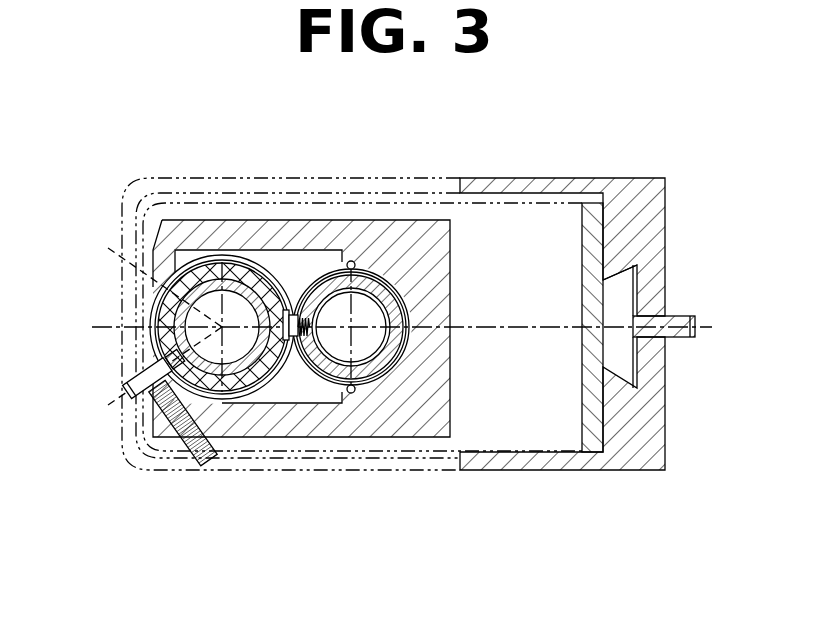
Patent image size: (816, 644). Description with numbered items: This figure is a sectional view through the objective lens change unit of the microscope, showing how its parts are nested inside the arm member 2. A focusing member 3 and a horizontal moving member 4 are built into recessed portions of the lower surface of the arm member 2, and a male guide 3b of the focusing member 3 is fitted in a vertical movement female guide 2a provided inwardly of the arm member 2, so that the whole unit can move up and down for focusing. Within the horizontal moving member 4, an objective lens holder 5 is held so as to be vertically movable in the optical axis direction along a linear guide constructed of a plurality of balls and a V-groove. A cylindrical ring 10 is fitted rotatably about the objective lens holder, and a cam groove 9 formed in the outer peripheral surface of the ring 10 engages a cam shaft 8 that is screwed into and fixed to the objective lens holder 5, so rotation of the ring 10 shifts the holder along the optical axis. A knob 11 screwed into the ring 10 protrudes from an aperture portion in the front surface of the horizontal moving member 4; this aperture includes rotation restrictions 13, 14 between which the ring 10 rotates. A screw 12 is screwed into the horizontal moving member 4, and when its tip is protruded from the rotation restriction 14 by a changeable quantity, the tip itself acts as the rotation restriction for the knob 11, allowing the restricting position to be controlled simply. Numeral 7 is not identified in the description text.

The arm member 2 is at (645, 447).
The vertical movement female guide 2a is at (625, 262).
The focusing member 3 is at (590, 410).
The male guide 3b is at (613, 289).
The horizontal moving member 4 is at (368, 397).
The objective lens holder 5 is at (390, 362).
The pin 7 is at (352, 261).
The cam shaft 8 is at (291, 310).
The cam groove 9 is at (240, 263).
The ring 10 is at (152, 315).
The knob 11 is at (120, 382).
The screw 12 is at (177, 447).
The rotation restriction 13 is at (150, 272).
The rotation restriction 14 is at (130, 455).